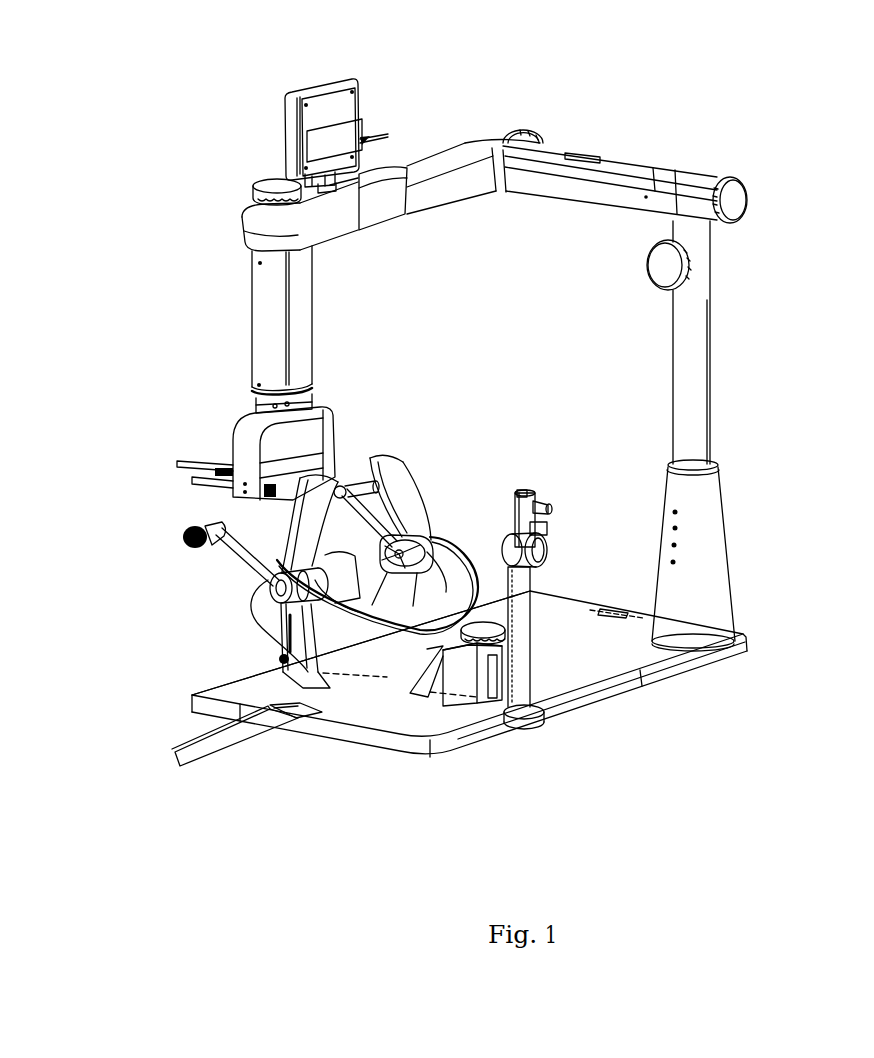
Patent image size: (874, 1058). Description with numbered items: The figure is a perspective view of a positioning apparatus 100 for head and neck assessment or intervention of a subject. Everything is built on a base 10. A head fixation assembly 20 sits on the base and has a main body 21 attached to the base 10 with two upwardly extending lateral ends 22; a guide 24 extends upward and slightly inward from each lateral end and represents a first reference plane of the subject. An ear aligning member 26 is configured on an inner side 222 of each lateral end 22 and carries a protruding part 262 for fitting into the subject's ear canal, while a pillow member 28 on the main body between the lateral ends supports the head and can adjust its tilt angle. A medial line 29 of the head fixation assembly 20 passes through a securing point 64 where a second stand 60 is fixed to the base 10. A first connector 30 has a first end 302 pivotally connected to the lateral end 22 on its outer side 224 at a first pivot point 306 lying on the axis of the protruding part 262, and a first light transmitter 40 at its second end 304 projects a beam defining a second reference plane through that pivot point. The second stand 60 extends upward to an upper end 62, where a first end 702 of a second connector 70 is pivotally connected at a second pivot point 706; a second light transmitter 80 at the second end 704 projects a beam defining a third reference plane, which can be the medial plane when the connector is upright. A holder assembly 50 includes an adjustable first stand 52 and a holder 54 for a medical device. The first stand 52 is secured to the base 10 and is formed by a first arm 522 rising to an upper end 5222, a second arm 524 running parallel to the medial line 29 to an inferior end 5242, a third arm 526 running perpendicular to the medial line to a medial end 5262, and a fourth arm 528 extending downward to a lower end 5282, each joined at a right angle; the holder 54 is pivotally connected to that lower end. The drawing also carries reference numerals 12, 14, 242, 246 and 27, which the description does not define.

The positioning apparatus 100 is at (220, 62).
The base 10 is at (648, 658).
The base front edge 12 is at (345, 735).
The foot plate 14 is at (220, 752).
The head fixation assembly 20 is at (212, 660).
The main body 21 is at (258, 668).
The lateral ends 22 is at (302, 548).
The inner side 222 is at (452, 582).
The outer side 224 is at (260, 617).
The guide 24 is at (408, 438).
The link rod 242 is at (376, 455).
The curved guide 246 is at (420, 495).
The ear aligning member 26 is at (432, 680).
The protruding part 262 is at (403, 635).
The pulley support 27 is at (375, 605).
The pillow member 28 is at (340, 565).
The medial line 29 is at (577, 712).
The first connector 30 is at (179, 547).
The first end 302 is at (215, 522).
The second end 304 is at (207, 548).
The first pivot point 306 is at (282, 582).
The first light transmitter 40 is at (200, 536).
The holder assembly 50 is at (572, 114).
The first stand 52 is at (703, 520).
The first arm 522 is at (697, 318).
The upper end 5222 is at (700, 235).
The second arm 524 is at (617, 167).
The inferior end 5242 is at (503, 128).
The third arm 526 is at (390, 183).
The medial end 5262 is at (242, 216).
The fourth arm 528 is at (303, 320).
The lower end 5282 is at (258, 378).
The holder 54 is at (224, 416).
The second stand 60 is at (577, 691).
The upper end 62 is at (523, 580).
The securing point 64 is at (520, 722).
The second connector 70 is at (582, 484).
The first end 702 is at (548, 540).
The second end 704 is at (526, 490).
The second pivot point 706 is at (548, 553).
The second light transmitter 80 is at (550, 502).